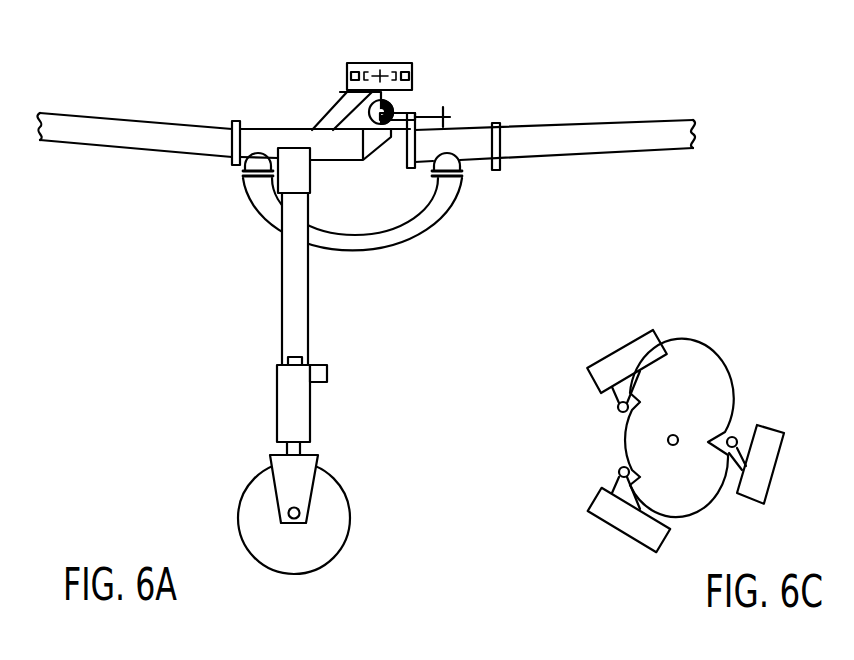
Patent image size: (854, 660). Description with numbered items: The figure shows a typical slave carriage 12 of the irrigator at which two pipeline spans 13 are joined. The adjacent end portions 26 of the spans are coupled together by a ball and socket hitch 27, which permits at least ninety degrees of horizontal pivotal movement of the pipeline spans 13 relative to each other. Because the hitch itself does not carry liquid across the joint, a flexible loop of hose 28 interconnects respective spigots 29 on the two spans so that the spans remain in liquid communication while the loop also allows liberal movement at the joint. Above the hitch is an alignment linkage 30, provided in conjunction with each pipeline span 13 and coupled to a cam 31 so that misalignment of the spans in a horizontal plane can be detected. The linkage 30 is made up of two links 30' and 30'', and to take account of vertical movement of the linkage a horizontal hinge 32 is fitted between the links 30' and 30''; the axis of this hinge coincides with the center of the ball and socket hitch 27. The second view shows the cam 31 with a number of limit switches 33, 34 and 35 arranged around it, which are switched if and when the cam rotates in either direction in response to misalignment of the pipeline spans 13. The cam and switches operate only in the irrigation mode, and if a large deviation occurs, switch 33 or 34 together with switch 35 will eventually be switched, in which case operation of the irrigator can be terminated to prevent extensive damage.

In FIG. 6A, the slave carriage 12 is at (205, 357).
In FIG. 6A, the pipeline span 13 is at (128, 128).
In FIG. 6A, the adjacent end portion 26 is at (268, 138).
In FIG. 6A, the ball and socket hitch 27 is at (310, 95).
In FIG. 6A, the flexible loop of hose 28 is at (403, 237).
In FIG. 6A, the spigot 29 is at (246, 183).
In FIG. 6A, the alignment linkage 30 is at (453, 70).
In FIG. 6A, the link 30' is at (350, 46).
In FIG. 6A, the link 30'' is at (476, 95).
In FIG. 6A, the cam 31 is at (388, 77).
In FIG. 6C, the cam 31 is at (650, 433).
In FIG. 6A, the horizontal hinge 32 is at (411, 98).
In FIG. 6C, the limit switch 33 is at (630, 520).
In FIG. 6C, the limit switch 34 is at (610, 363).
In FIG. 6C, the limit switch 35 is at (765, 440).